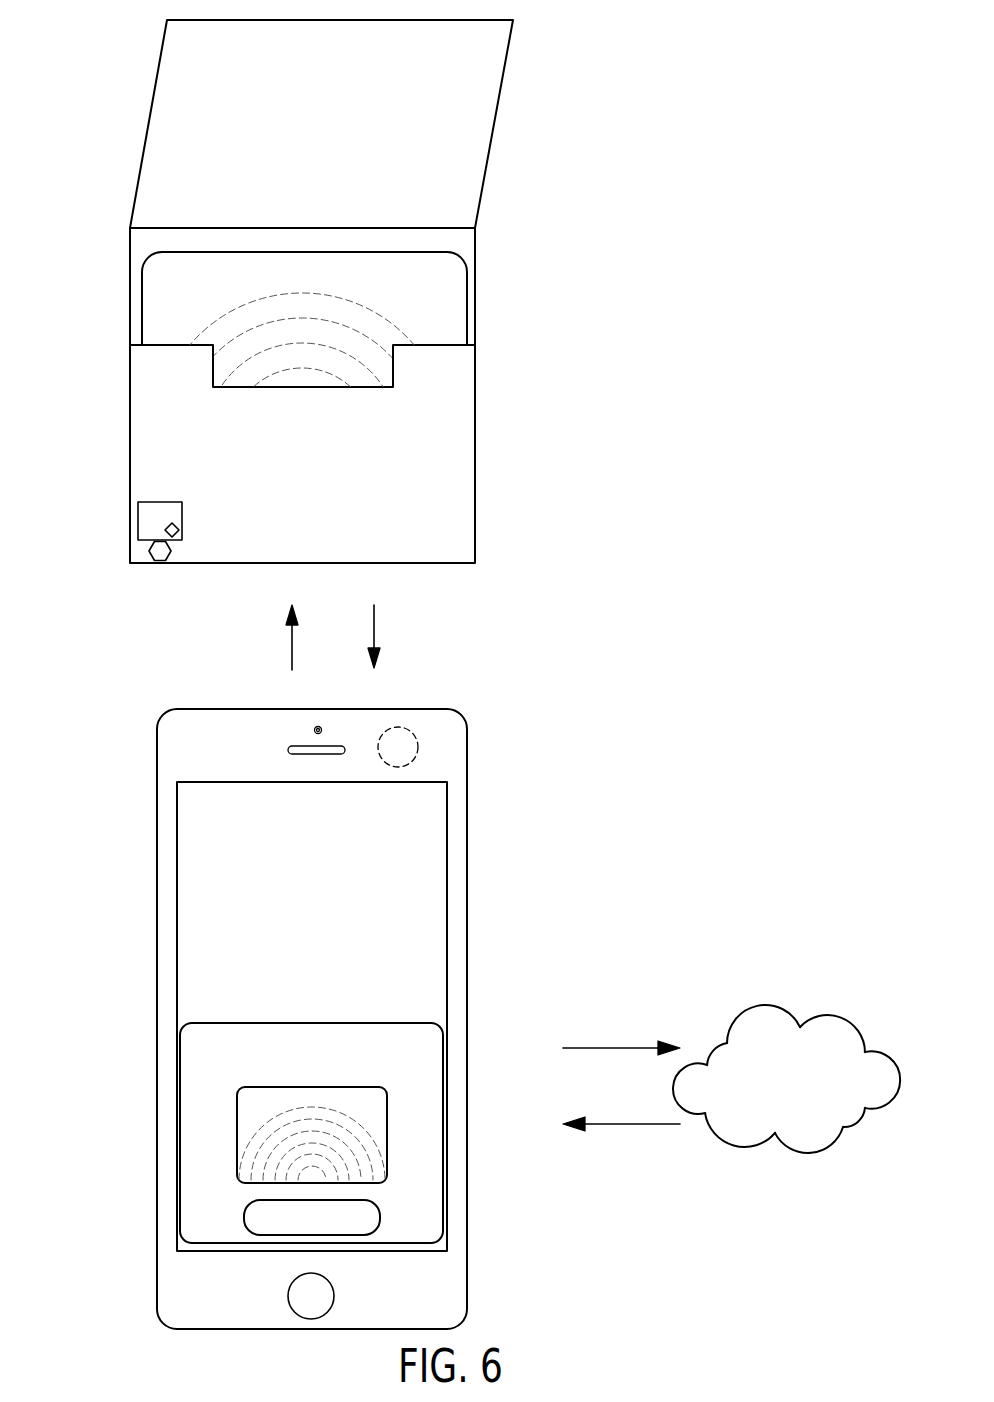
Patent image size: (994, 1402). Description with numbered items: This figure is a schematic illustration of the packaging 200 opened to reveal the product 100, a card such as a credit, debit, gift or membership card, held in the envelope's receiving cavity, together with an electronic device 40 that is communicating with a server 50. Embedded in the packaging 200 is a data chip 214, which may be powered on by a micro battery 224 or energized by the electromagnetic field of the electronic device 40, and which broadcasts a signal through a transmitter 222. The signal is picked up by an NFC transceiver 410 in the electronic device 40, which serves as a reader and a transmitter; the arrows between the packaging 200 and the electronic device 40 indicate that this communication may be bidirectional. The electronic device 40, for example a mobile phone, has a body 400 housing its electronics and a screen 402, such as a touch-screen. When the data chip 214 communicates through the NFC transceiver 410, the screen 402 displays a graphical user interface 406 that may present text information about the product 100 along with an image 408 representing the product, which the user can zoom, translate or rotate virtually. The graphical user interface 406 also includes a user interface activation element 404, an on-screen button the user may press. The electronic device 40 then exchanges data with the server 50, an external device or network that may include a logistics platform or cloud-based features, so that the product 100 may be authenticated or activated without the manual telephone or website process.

The packaging 200 is at (279, 332).
The product 100 is at (152, 313).
The data chip 214 is at (138, 520).
The micro battery 224 is at (178, 524).
The transmitter 222 is at (160, 561).
The electronic device 40 is at (376, 989).
The body 400 is at (462, 860).
The NFC transceiver 410 is at (398, 727).
The screen 402 is at (335, 933).
The graphical user interface 406 is at (410, 1079).
The image 408 is at (390, 1137).
The user interface activation element 404 is at (380, 1225).
The server 50 is at (795, 1093).